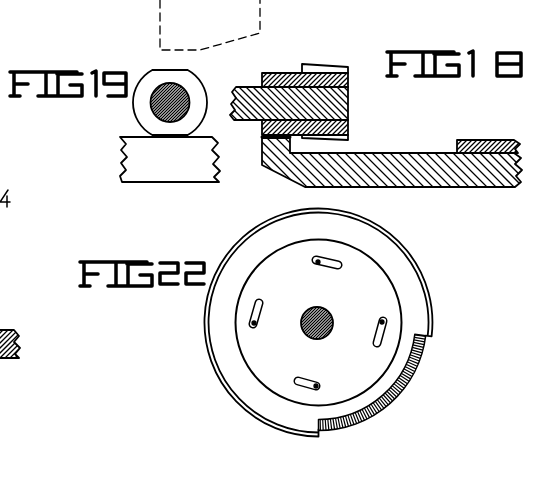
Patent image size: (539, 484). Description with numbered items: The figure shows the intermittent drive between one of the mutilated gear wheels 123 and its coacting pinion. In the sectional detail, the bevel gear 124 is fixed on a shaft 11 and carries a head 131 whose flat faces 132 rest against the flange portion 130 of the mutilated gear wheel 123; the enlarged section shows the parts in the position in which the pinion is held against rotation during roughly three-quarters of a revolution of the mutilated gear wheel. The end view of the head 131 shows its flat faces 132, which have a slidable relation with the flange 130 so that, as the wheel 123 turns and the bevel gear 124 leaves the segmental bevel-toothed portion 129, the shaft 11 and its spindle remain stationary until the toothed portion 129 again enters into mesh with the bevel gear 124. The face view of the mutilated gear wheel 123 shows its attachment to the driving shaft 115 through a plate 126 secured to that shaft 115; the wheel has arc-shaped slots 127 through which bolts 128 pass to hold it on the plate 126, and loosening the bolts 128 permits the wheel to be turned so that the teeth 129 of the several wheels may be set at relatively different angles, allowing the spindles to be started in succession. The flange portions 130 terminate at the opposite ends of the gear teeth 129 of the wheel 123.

In FIG. 19, the shaft 11 is at (153, 105).
In FIG. 18, the head 131 is at (269, 73).
In FIG. 19, the head 131 is at (190, 97).
In FIG. 19, the flat face 132 is at (166, 139).
In FIG. 18, the bevel gear 124 is at (347, 72).
In FIG. 18, the plate 126 is at (473, 140).
In FIG. 22, the plate 126 is at (306, 292).
In FIG. 18, the mutilated gear wheel 123 is at (450, 179).
In FIG. 22, the mutilated gear wheel 123 is at (385, 252).
In FIG. 18, the flange portion 130 is at (262, 163).
In FIG. 22, the flange portion 130 is at (234, 395).
In FIG. 22, the driving shaft 115 is at (305, 333).
In FIG. 22, the arc-shaped slot 127 is at (383, 338).
In FIG. 22, the bolt 128 is at (318, 386).
In FIG. 22, the segmental bevel-toothed portion 129 is at (400, 391).